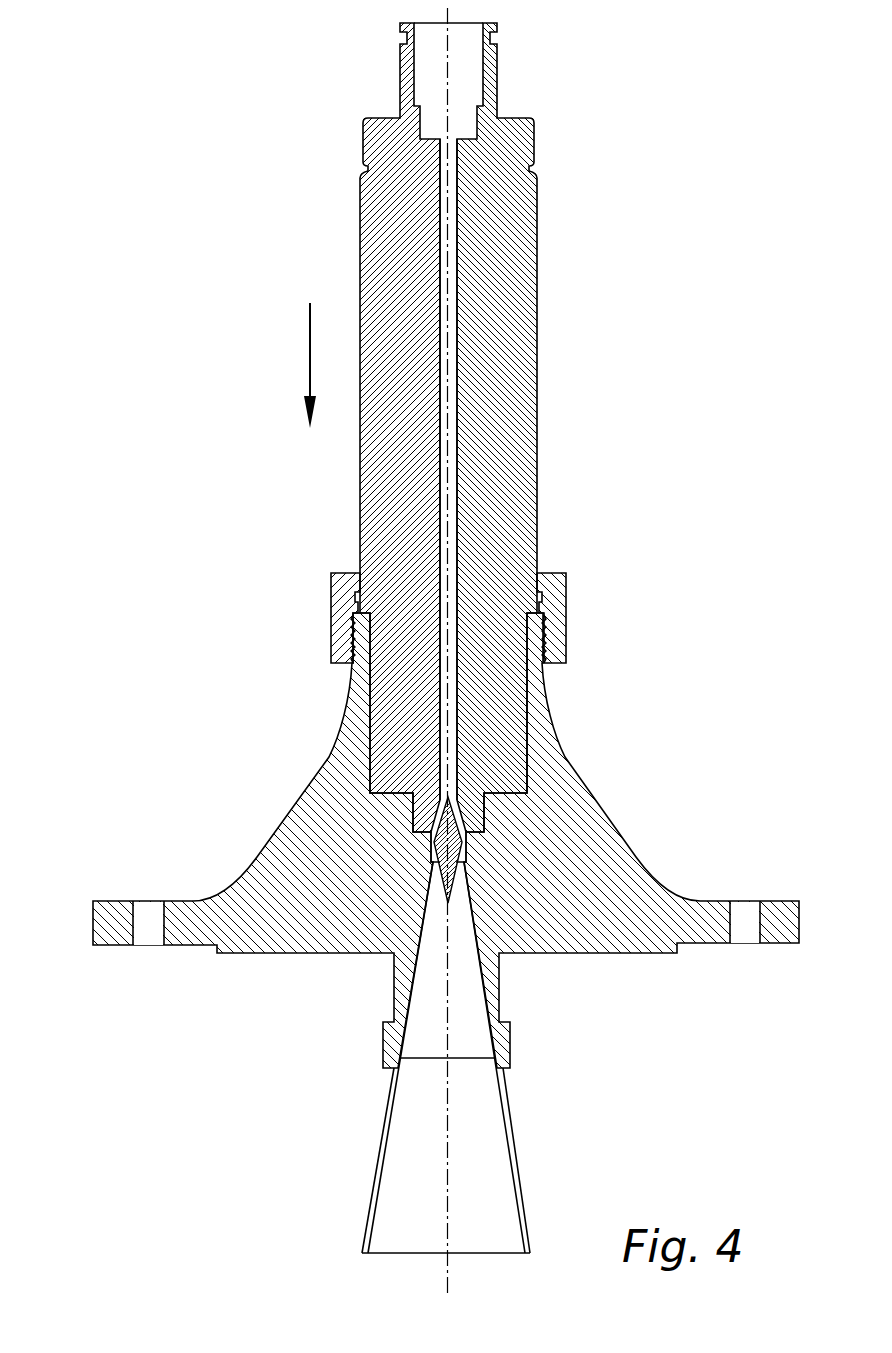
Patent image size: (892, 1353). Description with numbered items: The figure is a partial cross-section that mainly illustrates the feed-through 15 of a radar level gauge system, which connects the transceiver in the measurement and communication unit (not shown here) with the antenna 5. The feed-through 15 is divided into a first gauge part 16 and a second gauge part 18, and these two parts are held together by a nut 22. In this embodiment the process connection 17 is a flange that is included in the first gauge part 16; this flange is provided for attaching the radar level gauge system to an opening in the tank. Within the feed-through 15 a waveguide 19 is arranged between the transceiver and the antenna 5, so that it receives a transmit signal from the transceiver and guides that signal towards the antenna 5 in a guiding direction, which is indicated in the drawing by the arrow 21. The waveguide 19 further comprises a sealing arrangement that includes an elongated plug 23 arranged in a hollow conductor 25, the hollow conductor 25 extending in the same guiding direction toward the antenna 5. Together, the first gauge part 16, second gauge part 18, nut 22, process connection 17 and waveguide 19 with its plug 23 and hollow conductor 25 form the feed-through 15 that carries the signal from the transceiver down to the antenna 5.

The feed-through 15 is at (614, 209).
The second gauge part 18 is at (538, 458).
The nut 22 is at (331, 608).
The first gauge part 16 is at (270, 845).
The process connection 17 is at (130, 871).
The waveguide 19 is at (454, 765).
The hollow conductor 25 is at (462, 863).
The elongated plug 23 is at (455, 913).
The antenna 5 is at (382, 1142).
The arrow 21 is at (310, 377).